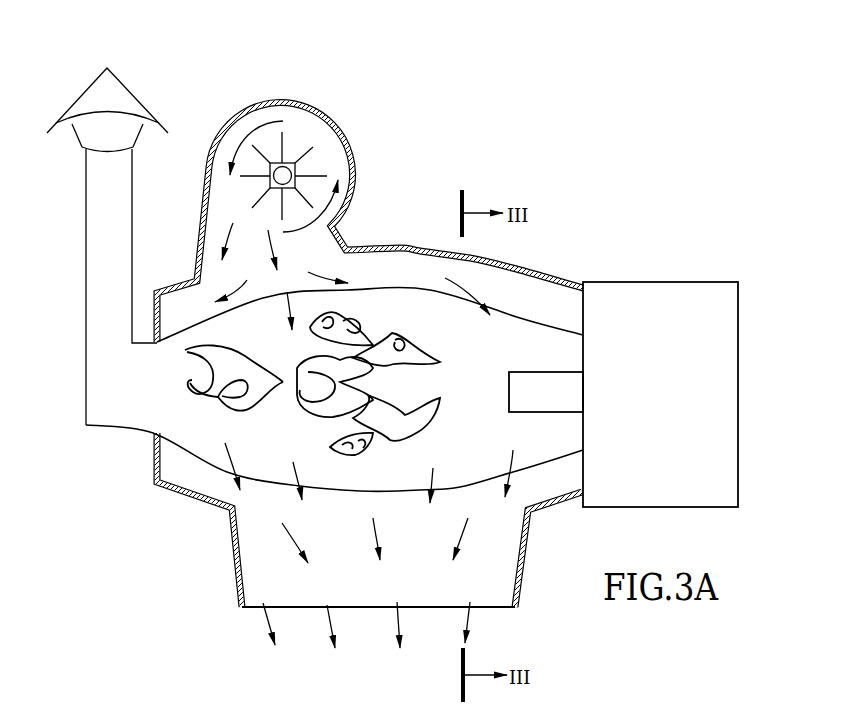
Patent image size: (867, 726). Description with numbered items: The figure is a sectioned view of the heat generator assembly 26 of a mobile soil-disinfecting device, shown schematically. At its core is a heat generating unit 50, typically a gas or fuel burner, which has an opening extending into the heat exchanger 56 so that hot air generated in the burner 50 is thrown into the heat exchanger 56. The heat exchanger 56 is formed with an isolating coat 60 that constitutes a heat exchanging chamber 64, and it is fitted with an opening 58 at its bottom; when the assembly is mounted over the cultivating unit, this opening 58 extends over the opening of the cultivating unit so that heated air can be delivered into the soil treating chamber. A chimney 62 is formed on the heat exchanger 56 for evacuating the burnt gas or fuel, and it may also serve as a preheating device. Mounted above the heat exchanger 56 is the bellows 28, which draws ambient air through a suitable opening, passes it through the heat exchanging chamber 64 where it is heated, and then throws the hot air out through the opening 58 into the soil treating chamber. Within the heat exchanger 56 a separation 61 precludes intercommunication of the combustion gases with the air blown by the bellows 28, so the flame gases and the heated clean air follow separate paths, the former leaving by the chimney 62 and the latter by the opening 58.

The heat generator assembly 26 is at (518, 127).
The bellows 28 is at (333, 145).
The heat generating unit 50 is at (222, 413).
The heat exchanger 56 is at (537, 232).
The opening 58 is at (483, 603).
The isolating coat 60 is at (423, 250).
The separation 61 is at (387, 297).
The chimney 62 is at (98, 232).
The heat exchanging chamber 64 is at (535, 293).